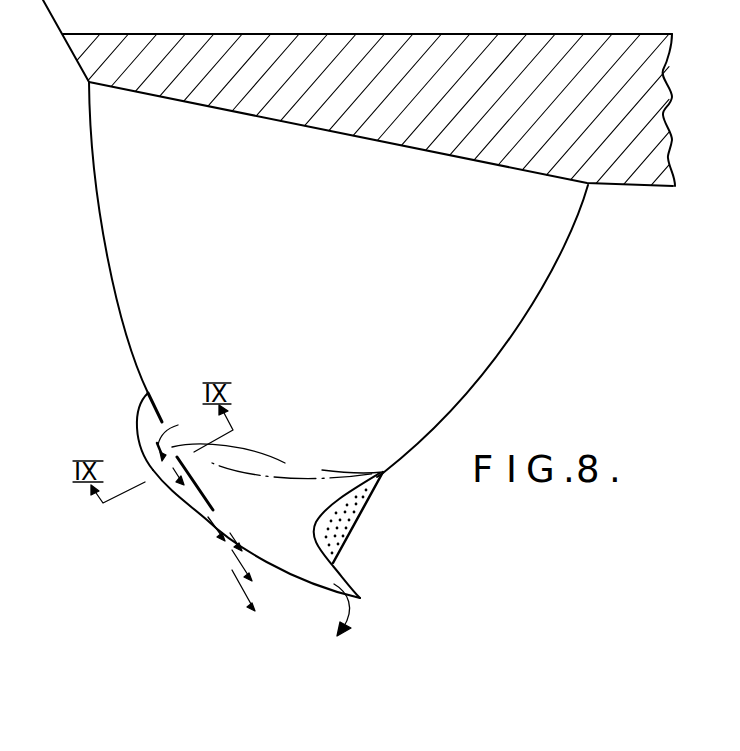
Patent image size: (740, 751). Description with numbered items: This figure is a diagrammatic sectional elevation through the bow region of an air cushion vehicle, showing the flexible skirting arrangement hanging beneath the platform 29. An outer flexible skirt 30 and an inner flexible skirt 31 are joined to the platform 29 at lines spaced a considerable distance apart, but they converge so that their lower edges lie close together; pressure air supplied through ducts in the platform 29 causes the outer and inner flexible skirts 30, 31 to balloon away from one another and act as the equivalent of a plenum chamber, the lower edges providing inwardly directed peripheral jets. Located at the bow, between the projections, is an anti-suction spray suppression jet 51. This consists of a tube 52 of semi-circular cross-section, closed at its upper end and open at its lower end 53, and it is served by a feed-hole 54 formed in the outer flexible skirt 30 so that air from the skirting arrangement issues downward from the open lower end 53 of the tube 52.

The platform 29 is at (258, 55).
The outer flexible skirt 30 is at (93, 172).
The inner flexible skirt 31 is at (557, 263).
The anti-suction spray suppression jet 51 is at (140, 423).
The tube 52 is at (168, 488).
The lower end 53 is at (207, 508).
The feed-hole 54 is at (277, 461).